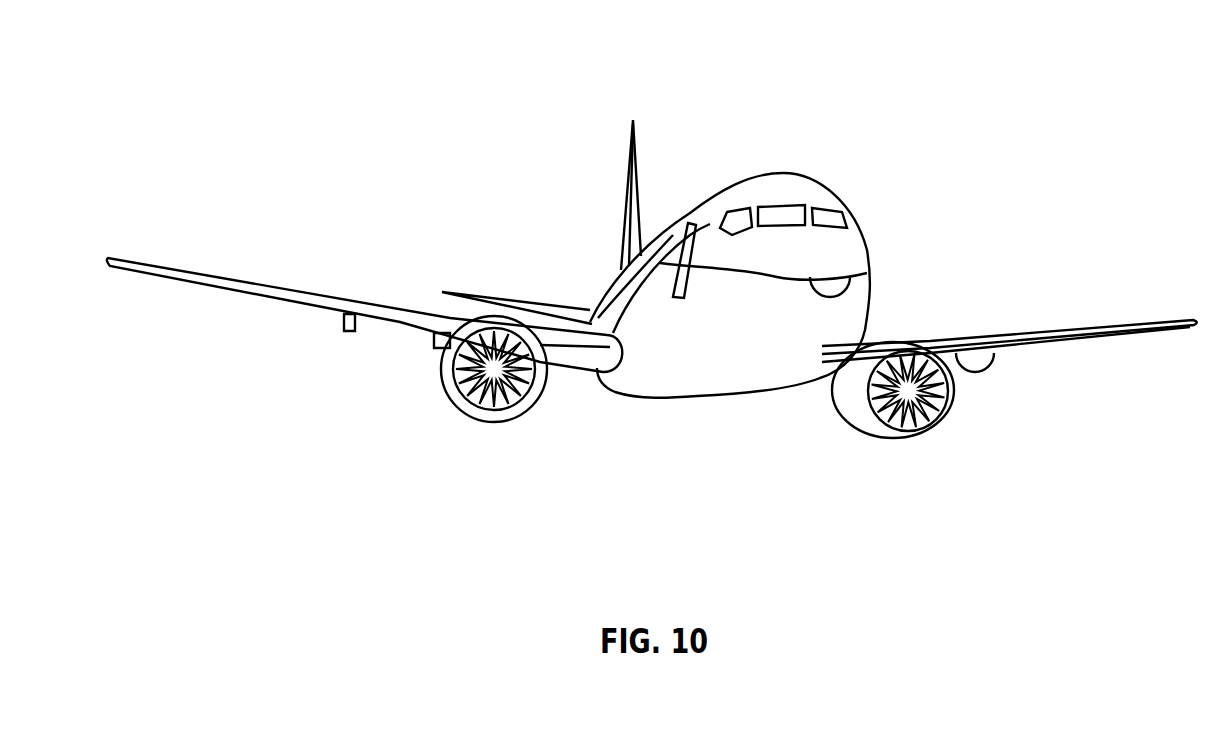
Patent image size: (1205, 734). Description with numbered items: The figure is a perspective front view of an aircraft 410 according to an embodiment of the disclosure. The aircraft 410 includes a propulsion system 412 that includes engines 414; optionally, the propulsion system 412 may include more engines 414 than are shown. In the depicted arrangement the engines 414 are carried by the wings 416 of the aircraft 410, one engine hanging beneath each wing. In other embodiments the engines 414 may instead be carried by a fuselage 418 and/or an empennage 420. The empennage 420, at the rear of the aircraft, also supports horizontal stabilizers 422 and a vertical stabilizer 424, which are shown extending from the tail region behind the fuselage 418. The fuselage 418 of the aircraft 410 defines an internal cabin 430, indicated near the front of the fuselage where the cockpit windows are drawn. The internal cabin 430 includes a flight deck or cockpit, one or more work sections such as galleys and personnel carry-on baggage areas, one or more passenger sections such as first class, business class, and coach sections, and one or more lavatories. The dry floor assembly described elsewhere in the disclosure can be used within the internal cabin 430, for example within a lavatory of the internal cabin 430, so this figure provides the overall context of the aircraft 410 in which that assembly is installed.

The aircraft 410 is at (380, 60).
The propulsion system 412 is at (397, 386).
The engines 414 is at (487, 422).
The wings 416 is at (252, 283).
The fuselage 418 is at (868, 241).
The empennage 420 is at (622, 275).
The horizontal stabilizers 422 is at (485, 295).
The vertical stabilizer 424 is at (627, 163).
The internal cabin 430 is at (785, 212).